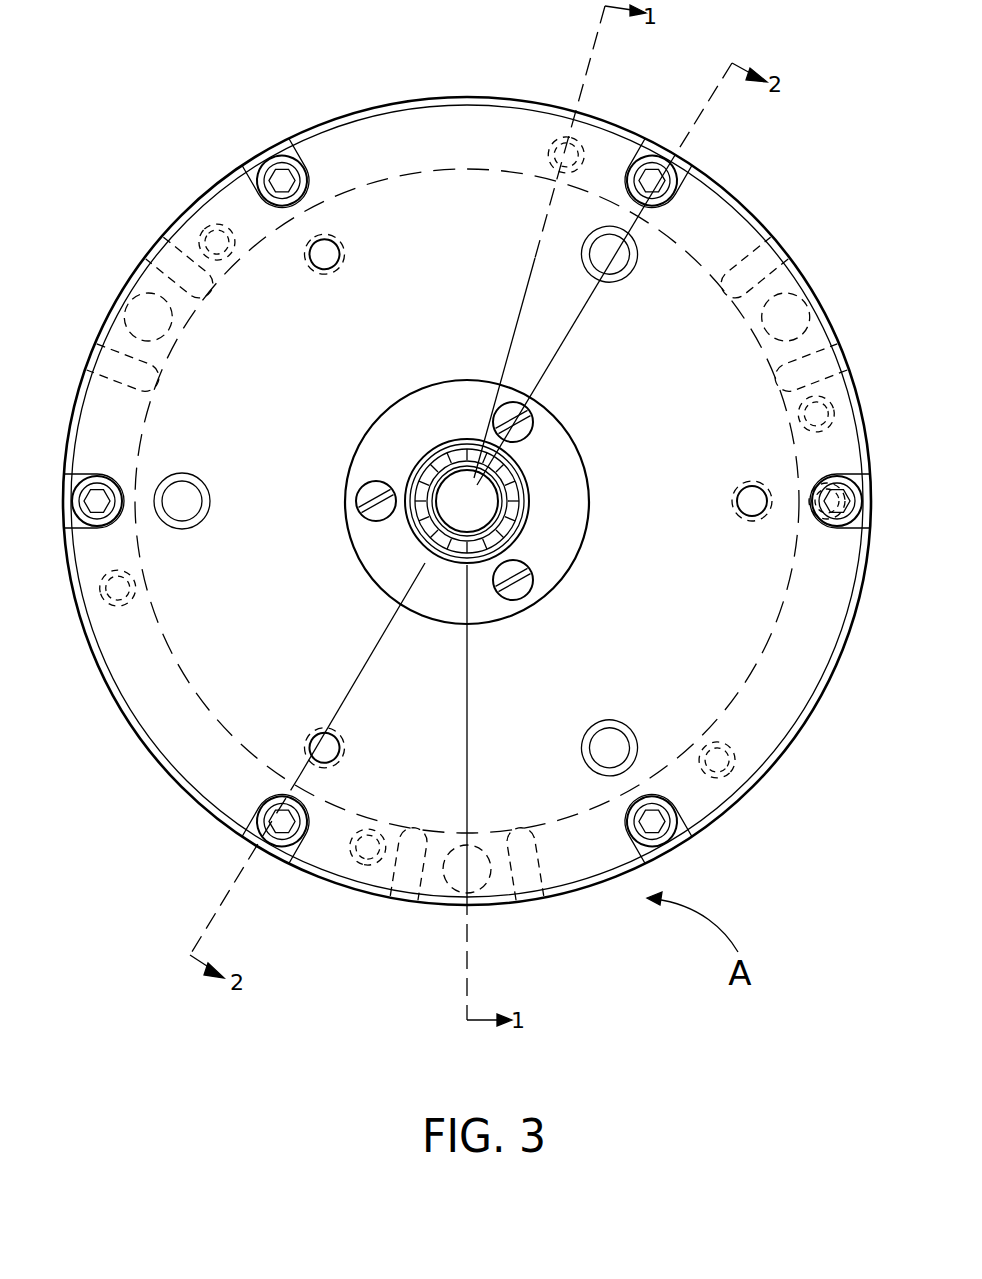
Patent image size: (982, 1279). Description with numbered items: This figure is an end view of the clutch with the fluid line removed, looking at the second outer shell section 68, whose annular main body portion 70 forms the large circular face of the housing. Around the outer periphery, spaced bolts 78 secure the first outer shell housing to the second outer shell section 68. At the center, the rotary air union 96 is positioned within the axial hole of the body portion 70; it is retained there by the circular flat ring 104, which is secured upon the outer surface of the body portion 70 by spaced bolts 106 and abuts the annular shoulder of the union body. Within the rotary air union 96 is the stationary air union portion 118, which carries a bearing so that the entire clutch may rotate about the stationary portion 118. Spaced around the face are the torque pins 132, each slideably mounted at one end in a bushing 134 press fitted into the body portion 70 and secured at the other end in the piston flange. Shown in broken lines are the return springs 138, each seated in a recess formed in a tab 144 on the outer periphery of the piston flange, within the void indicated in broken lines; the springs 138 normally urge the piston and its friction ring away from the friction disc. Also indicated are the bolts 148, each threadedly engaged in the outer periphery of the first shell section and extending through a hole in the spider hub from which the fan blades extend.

The second outer shell section 68 is at (766, 230).
The annular main body portion 70 is at (362, 353).
The spaced bolts 78 is at (295, 172).
The rotary air union 96 is at (516, 478).
The circular flat ring 104 is at (392, 432).
The spaced bolts 106 is at (530, 420).
The stationary air union portion 118 is at (430, 512).
The torque pins 132 is at (612, 258).
The bushing 134 is at (607, 238).
The return springs 138 is at (168, 318).
The tab 144 is at (110, 348).
The bolts 148 is at (548, 150).